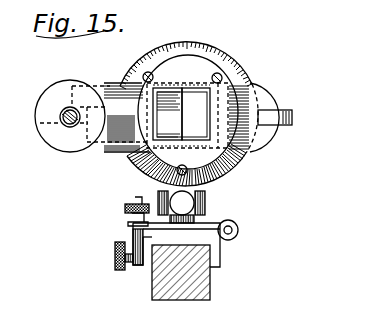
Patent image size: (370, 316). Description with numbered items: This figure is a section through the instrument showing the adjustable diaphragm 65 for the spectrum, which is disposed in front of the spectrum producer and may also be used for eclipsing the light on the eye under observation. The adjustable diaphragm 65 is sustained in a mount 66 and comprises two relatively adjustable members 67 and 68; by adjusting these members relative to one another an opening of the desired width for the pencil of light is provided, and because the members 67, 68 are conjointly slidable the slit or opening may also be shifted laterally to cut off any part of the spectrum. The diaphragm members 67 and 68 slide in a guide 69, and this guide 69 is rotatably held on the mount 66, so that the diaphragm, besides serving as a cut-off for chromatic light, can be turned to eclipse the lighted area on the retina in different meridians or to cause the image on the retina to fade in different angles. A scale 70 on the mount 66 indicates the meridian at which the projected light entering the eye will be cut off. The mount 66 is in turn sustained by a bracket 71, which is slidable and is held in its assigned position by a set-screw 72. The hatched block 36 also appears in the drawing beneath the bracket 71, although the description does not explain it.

The support block 36 is at (203, 291).
The adjustable diaphragm 65 is at (128, 163).
The mount 66 is at (237, 66).
The diaphragm member 67 is at (183, 114).
The diaphragm member 68 is at (167, 114).
The guide 69 is at (193, 63).
The scale 70 is at (163, 44).
The bracket 71 is at (192, 235).
The set-screw 72 is at (114, 258).